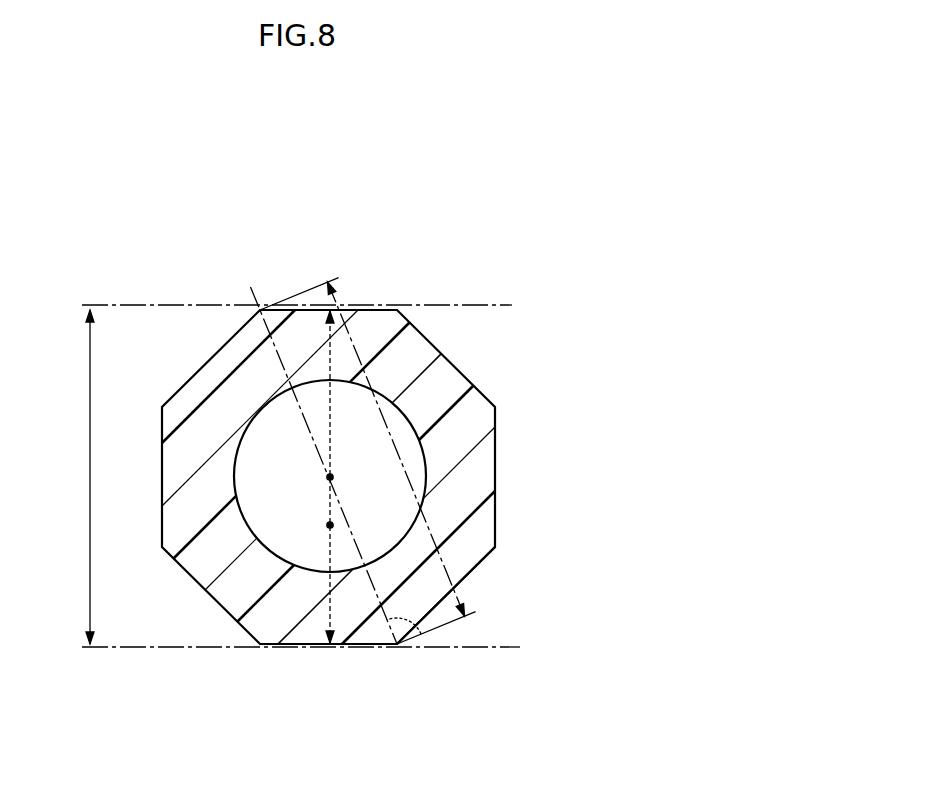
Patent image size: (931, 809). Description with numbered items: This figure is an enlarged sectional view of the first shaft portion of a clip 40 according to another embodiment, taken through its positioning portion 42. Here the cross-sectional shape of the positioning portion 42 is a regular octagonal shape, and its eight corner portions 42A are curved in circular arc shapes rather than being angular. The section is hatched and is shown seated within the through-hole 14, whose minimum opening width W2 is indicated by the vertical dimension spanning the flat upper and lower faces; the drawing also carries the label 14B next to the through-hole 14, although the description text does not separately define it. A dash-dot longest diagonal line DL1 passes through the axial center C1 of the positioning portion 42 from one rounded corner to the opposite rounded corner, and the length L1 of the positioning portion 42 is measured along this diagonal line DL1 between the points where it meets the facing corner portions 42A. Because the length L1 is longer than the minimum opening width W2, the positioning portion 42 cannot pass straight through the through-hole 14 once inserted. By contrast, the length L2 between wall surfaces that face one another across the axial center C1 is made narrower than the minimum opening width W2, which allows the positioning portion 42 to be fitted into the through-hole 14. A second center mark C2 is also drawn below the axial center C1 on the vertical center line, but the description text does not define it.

The clip 40 is at (430, 456).
The positioning portion 42 is at (497, 476).
The corner portions 42A is at (497, 547).
The through-hole 14 is at (343, 276).
The flat surface of member 14 14B is at (507, 303).
The minimum opening width W2 is at (90, 478).
The axial center C1 is at (336, 477).
The offset center C2 is at (327, 525).
The longest diagonal line DL1 is at (410, 622).
The length L1 is at (388, 428).
The length L2 is at (330, 582).